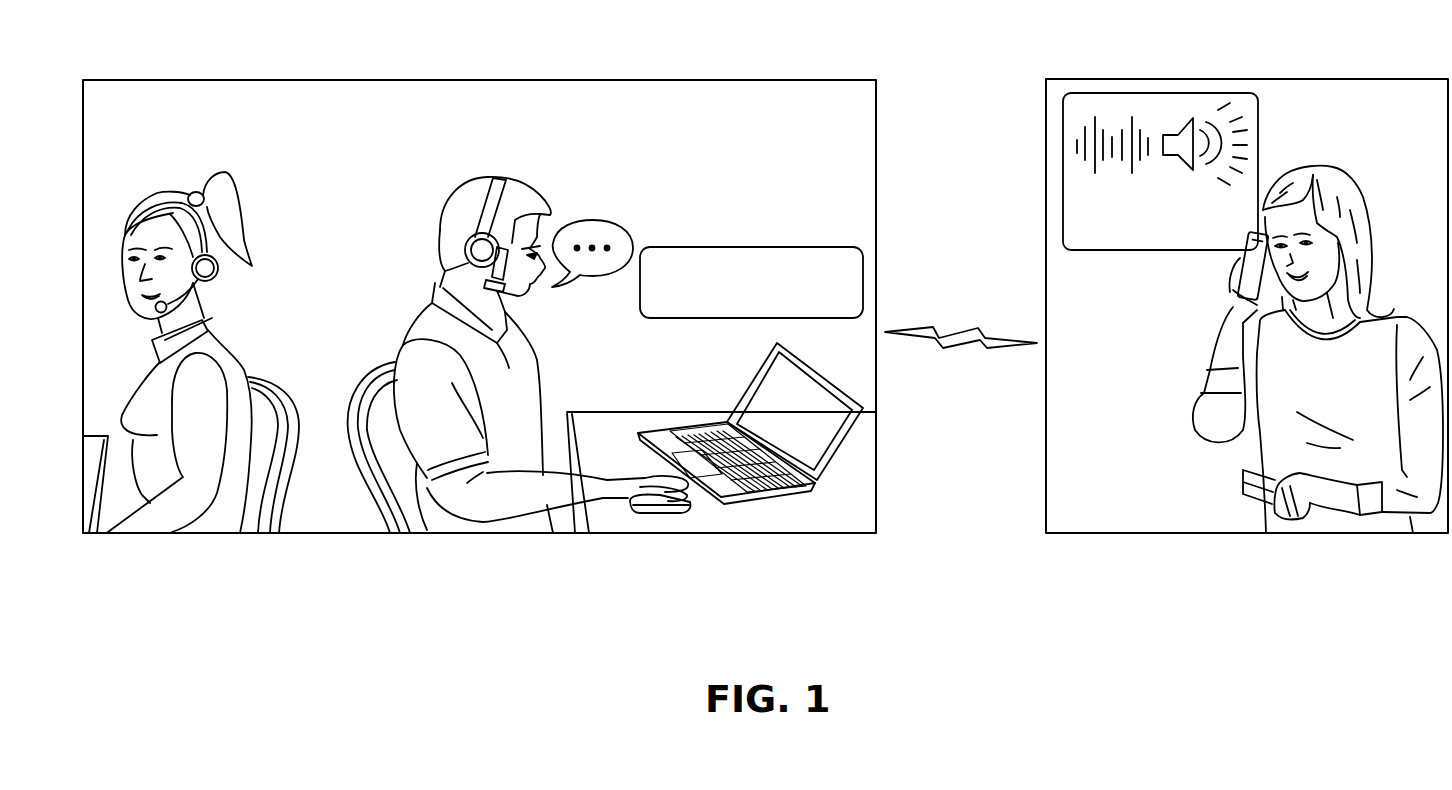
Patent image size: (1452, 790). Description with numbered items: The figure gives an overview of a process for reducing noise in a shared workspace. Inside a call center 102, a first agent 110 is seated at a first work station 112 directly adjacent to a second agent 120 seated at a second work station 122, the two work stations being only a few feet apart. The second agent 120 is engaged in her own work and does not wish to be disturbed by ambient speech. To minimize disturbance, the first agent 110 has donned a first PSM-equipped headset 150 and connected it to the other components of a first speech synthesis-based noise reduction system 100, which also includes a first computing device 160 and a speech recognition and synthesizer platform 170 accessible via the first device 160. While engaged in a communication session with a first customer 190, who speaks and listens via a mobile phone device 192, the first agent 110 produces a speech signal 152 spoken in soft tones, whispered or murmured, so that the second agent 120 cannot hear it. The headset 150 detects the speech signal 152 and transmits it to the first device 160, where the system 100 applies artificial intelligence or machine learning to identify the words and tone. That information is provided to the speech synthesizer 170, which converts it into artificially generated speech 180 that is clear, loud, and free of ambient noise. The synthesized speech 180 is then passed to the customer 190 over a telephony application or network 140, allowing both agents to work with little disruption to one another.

The first speech synthesis-based noise reduction system 100 is at (757, 122).
The call center 102 is at (324, 125).
The first agent 110 is at (414, 247).
The first work station 112 is at (617, 583).
The second agent 120 is at (158, 184).
The second work station 122 is at (208, 583).
The telephony application and/or network 140 is at (955, 304).
The first PSM-equipped headset 150 is at (527, 303).
The speech signal 152 is at (592, 221).
The first computing device 160 is at (767, 400).
The speech recognition and synthesizer platform 170 is at (760, 247).
The artificially generated speech 180 is at (1259, 139).
The first customer 190 is at (1174, 348).
The mobile phone device 192 is at (1232, 300).